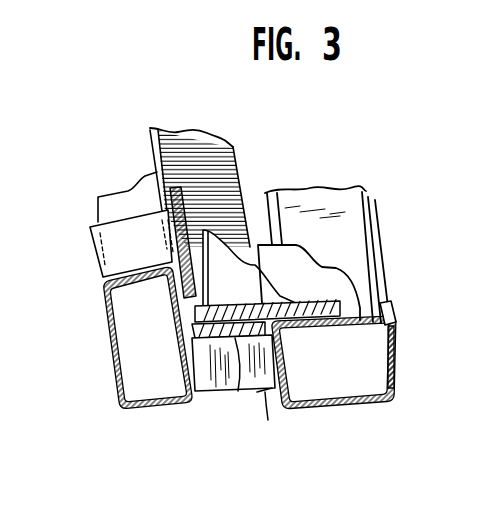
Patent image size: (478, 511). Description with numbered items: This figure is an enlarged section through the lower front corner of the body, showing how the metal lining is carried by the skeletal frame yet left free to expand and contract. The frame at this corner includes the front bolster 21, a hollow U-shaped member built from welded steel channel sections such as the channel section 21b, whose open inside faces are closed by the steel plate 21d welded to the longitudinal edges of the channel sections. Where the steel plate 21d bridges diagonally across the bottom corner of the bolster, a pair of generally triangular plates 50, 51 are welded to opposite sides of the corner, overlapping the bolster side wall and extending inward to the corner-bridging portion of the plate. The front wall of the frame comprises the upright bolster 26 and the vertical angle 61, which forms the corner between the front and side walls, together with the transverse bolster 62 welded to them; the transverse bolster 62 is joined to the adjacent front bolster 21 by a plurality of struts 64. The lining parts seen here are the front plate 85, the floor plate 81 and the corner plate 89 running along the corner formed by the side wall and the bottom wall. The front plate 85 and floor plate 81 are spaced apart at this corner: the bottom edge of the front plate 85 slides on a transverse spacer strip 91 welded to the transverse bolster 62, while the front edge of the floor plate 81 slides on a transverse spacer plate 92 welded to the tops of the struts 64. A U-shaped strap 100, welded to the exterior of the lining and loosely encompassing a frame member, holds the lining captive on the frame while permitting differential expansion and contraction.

The front bolster 21 is at (348, 416).
The channel section 21b is at (396, 352).
The steel plate 21d is at (384, 318).
The upright bolster 26 is at (96, 212).
The triangular plate 50 is at (372, 215).
The triangular plate 51 is at (268, 213).
The vertical angle 61 is at (237, 150).
The transverse bolster 62 is at (118, 406).
The strut 64 is at (257, 392).
The floor plate 81 is at (353, 291).
The front plate 85 is at (180, 200).
The corner plate 89 is at (218, 252).
The transverse spacer strip 91 is at (205, 393).
The transverse spacer plate 92 is at (236, 393).
The U-shaped strap 100 is at (91, 255).